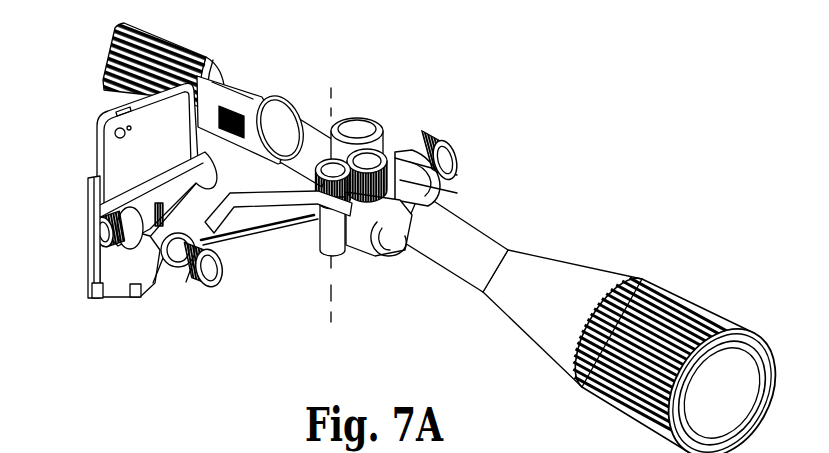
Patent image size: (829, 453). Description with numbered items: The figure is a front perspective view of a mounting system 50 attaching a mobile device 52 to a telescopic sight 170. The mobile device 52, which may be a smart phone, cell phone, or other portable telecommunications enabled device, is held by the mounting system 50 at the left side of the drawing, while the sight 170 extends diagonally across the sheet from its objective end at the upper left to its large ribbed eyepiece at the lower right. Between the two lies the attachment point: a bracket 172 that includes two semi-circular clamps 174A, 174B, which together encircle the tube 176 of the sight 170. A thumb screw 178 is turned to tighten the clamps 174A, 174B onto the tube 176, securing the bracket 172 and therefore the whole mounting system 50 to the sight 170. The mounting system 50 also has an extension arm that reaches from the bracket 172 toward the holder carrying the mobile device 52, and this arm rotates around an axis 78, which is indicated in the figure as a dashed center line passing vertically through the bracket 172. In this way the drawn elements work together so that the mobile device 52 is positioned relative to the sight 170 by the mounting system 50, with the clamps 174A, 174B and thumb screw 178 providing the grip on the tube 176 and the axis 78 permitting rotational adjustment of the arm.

The mounting system 50 is at (258, 228).
The mobile device 52 is at (96, 142).
The axis 78 is at (331, 321).
The sight 170 is at (533, 323).
The bracket 172 is at (398, 158).
The semi-circular clamp 174A is at (384, 243).
The semi-circular clamp 174B is at (448, 174).
The tube 176 is at (447, 260).
The thumb screw 178 is at (446, 143).